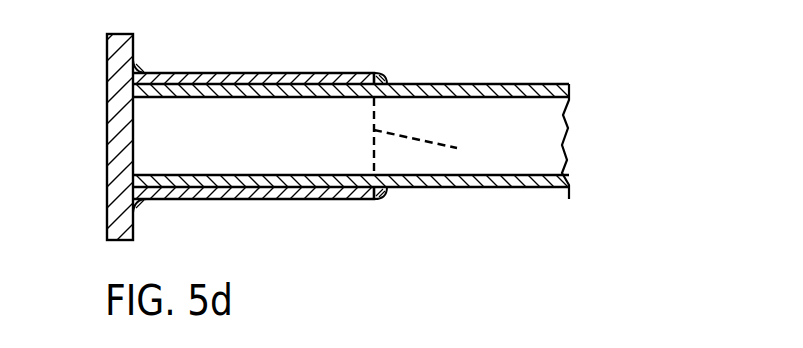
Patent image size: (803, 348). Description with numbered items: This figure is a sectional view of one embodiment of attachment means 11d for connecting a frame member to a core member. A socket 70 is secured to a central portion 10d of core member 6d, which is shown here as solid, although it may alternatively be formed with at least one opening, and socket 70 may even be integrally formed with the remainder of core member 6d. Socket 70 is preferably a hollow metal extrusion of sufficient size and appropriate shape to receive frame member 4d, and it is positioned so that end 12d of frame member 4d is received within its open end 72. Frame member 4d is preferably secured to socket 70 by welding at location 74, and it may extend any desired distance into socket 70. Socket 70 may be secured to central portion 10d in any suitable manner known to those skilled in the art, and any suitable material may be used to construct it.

The core member 6d is at (107, 34).
The frame member 4d is at (497, 84).
The socket 70 is at (209, 73).
The welding location 74 is at (386, 74).
The attachment means 11d is at (320, 66).
The central portion 10d is at (134, 148).
The open end 72 is at (430, 137).
The end of frame member 12d is at (310, 197).